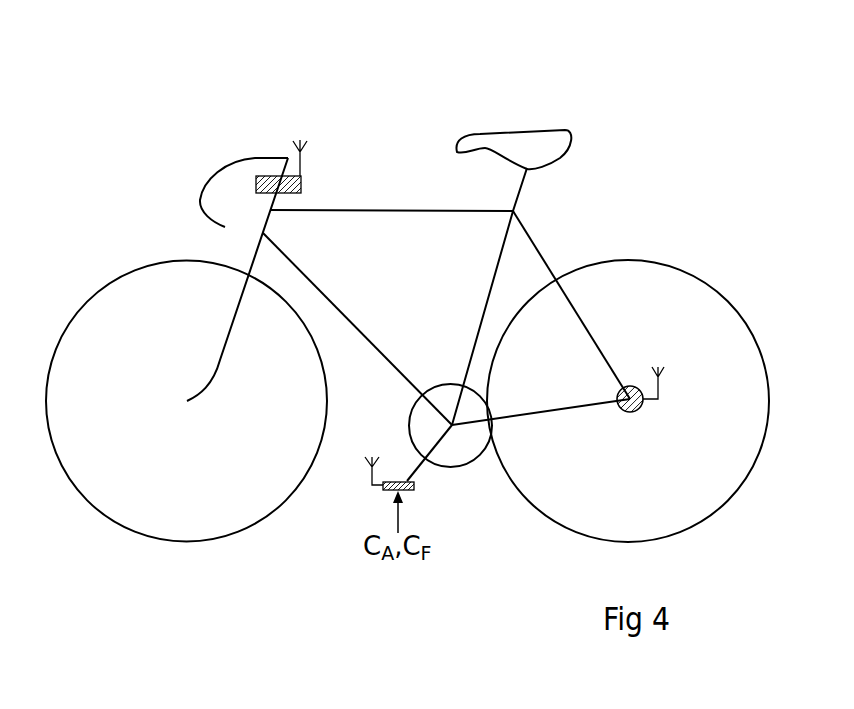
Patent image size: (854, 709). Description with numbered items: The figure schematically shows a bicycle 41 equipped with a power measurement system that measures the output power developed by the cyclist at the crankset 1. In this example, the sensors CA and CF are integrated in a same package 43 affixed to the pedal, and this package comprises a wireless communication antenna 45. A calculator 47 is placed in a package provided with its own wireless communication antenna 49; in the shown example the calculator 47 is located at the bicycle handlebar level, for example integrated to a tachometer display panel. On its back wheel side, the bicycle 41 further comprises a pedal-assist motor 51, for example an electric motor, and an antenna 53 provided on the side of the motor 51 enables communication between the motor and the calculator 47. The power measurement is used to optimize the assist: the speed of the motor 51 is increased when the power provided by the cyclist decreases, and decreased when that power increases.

The bicycle 41 is at (422, 92).
The crankset 1 is at (475, 473).
The package 43 is at (414, 486).
The wireless communication antenna 45 is at (374, 458).
The calculator 47 is at (301, 185).
The wireless communication antenna 49 is at (307, 150).
The pedal-assist motor 51 is at (633, 412).
The antenna 53 is at (664, 374).